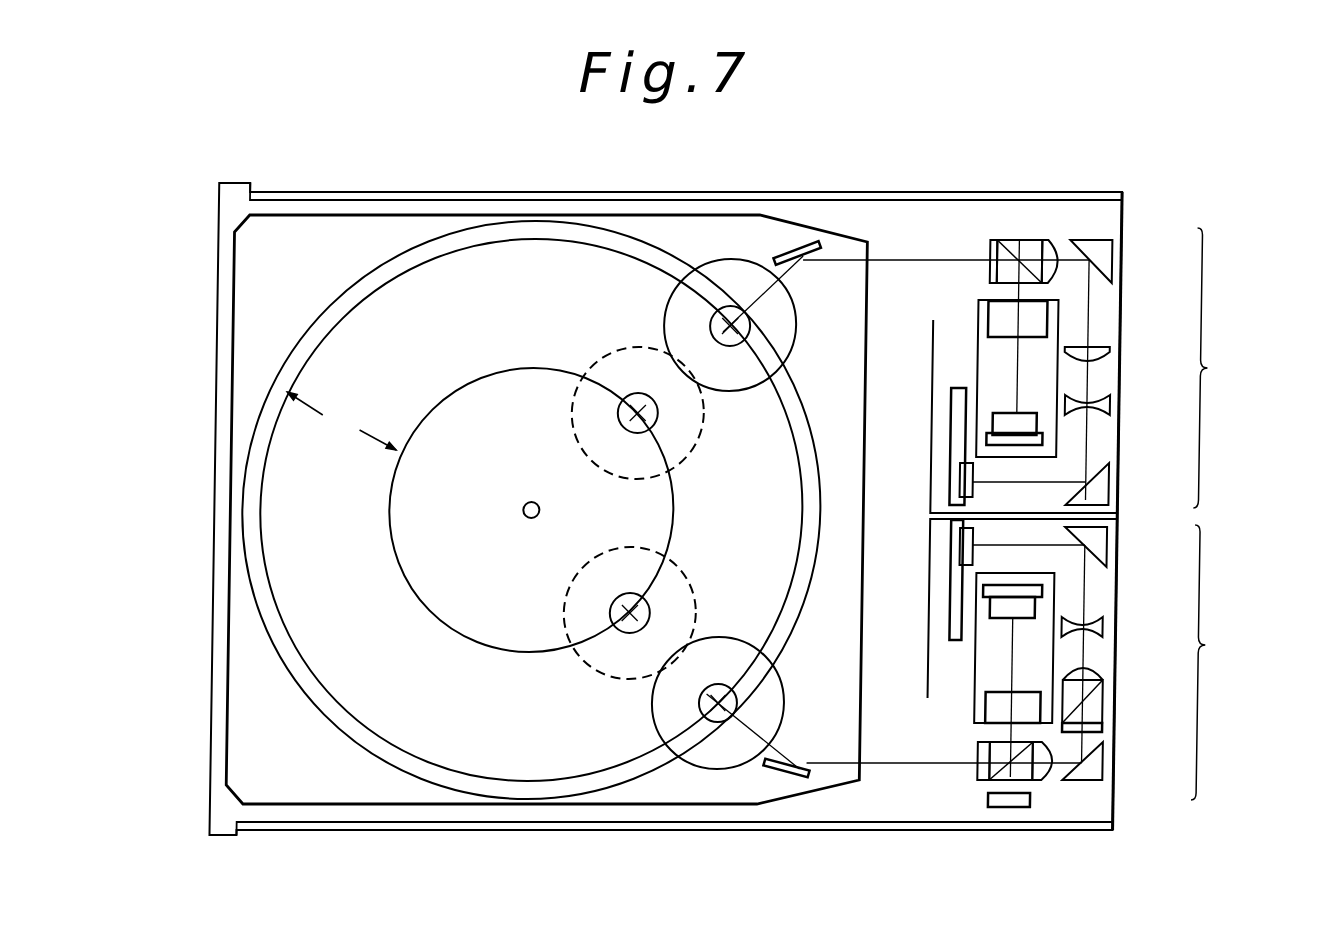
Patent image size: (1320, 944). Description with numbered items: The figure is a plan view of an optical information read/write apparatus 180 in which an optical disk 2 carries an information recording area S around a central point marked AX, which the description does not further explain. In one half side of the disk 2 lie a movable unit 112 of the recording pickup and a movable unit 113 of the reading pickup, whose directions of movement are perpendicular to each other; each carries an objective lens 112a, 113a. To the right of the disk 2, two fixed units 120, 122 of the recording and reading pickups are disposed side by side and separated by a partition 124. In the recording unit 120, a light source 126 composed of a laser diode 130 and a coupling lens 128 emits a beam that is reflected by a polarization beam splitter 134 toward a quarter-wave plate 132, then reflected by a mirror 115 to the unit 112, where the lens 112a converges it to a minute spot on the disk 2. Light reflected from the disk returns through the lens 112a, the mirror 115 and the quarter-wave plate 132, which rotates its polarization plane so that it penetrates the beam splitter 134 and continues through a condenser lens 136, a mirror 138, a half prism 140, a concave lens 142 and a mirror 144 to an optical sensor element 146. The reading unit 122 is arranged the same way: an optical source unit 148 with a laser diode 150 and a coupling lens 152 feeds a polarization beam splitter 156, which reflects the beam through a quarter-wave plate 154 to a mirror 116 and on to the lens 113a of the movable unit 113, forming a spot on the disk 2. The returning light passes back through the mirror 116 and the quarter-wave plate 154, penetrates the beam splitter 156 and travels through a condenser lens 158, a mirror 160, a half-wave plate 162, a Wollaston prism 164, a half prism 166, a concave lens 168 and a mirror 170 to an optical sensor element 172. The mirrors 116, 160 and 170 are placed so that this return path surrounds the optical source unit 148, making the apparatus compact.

The optical disk 2 is at (333, 715).
The information recording area S is at (341, 421).
The rotation axis AX is at (528, 518).
The movable unit of the recording pickup 112 is at (722, 258).
The objective lens 112a is at (754, 324).
The movable unit of the reading pickup 113 is at (729, 760).
The objective lens 113a is at (740, 703).
The mirror 115 is at (798, 248).
The mirror 116 is at (807, 780).
The fixed unit of the recording pickup 120 is at (1097, 370).
The fixed unit of the reading pickup 122 is at (1094, 659).
The partition 124 is at (934, 497).
The light source 126 is at (982, 310).
The coupling lens 128 is at (1002, 325).
The laser diode 130 is at (1006, 418).
The quarter-wave plate 132 is at (991, 243).
The polarization beam splitter 134 is at (1020, 240).
The condenser lens 136 is at (1055, 243).
The mirror 138 is at (1110, 257).
The half prism 140 is at (1104, 355).
The concave lens 142 is at (1105, 405).
The mirror 144 is at (1104, 488).
The optical sensor element 146 is at (961, 463).
The optical source unit 148 is at (989, 657).
The laser diode 150 is at (1004, 607).
The coupling lens 152 is at (1000, 712).
The quarter-wave plate 154 is at (987, 777).
The polarization beam splitter 156 is at (1032, 775).
The condenser lens 158 is at (1056, 782).
The mirror 160 is at (1105, 768).
The half-wave plate 162 is at (1106, 727).
The Wollaston prism 164 is at (1102, 698).
The half prism 166 is at (1104, 677).
The concave lens 168 is at (1106, 617).
The mirror 170 is at (1105, 542).
The optical sensor element 172 is at (953, 565).
The optical information read/write apparatus 180 is at (485, 190).